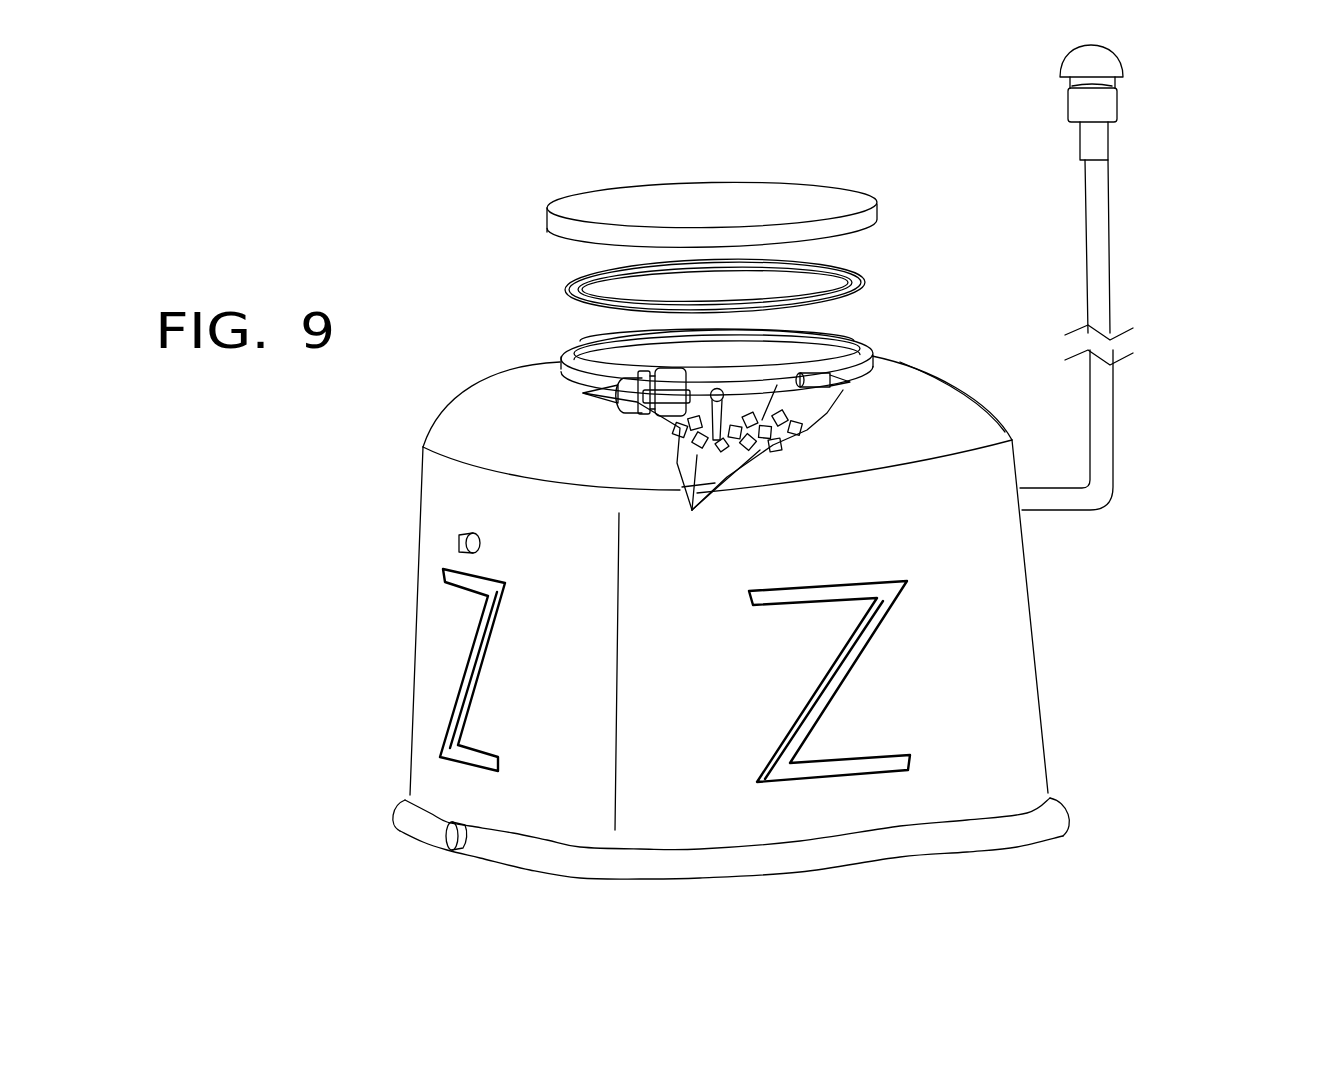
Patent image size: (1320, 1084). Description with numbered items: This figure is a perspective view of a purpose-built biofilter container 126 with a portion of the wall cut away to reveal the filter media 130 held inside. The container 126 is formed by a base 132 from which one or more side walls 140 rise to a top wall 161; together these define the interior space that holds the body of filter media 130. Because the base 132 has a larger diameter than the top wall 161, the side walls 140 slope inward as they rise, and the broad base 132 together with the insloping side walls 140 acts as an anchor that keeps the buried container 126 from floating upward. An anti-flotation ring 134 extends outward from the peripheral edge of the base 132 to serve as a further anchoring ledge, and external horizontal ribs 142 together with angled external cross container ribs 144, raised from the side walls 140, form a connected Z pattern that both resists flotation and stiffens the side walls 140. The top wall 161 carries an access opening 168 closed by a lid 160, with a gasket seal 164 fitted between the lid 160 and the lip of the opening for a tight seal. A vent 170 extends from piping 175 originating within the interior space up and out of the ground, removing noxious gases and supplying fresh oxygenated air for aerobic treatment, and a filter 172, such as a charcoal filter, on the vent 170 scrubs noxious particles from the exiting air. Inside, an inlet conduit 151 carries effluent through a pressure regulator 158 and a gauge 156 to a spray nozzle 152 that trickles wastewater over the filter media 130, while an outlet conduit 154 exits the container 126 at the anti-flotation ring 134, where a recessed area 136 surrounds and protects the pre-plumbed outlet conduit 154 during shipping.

The biofilter container 126 is at (1080, 581).
The filter media 130 is at (689, 504).
The base 132 is at (1026, 857).
The anti-flotation ring 134 is at (1071, 815).
The recessed area 136 is at (464, 826).
The side walls 140 is at (1044, 722).
The external horizontal ribs 142 is at (818, 588).
The external cross container ribs 144 is at (464, 686).
The inlet conduit 151 is at (455, 537).
The spray nozzle 152 is at (692, 425).
The outlet conduit 154 is at (790, 395).
The gauge 156 is at (835, 388).
The pressure regulator 158 is at (610, 395).
The lid 160 is at (878, 212).
The top wall 161 is at (935, 395).
The gasket seal 164 is at (566, 290).
The access opening 168 is at (668, 360).
The vent 170 is at (1048, 90).
The filter 172 is at (1113, 110).
The piping 175 is at (1100, 253).